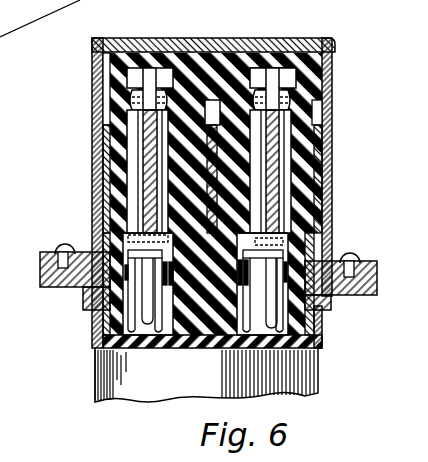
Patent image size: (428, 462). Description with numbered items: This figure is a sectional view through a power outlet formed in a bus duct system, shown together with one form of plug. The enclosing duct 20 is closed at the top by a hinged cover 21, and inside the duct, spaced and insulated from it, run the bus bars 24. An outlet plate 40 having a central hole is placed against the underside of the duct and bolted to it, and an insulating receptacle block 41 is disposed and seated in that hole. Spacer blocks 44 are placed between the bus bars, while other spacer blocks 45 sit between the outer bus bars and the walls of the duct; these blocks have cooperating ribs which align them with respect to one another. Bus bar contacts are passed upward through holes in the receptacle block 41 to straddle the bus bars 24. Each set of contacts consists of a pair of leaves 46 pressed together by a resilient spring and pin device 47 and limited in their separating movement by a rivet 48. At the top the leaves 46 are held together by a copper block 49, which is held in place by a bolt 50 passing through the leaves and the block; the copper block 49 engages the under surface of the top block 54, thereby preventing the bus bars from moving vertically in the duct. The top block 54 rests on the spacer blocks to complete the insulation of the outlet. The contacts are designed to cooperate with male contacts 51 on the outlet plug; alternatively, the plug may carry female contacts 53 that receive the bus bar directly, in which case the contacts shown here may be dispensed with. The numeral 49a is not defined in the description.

The duct 20 is at (97, 176).
The hinged cover 21 is at (126, 43).
The female contacts 53 is at (182, 46).
The spacer blocks 44 is at (241, 67).
The top block 54 is at (268, 67).
The bolt 50 is at (293, 92).
The copper block 49 is at (296, 110).
The spacer blocks 45 is at (104, 136).
The leaves 46 is at (284, 165).
The bus bars 24 is at (140, 189).
The rivet 48 is at (268, 243).
The spring and pin device 47 is at (270, 272).
The outlet plate 40 is at (42, 262).
The spring contact clip 49a is at (116, 300).
The male contacts 51 is at (271, 336).
The insulating receptacle block 41 is at (193, 346).